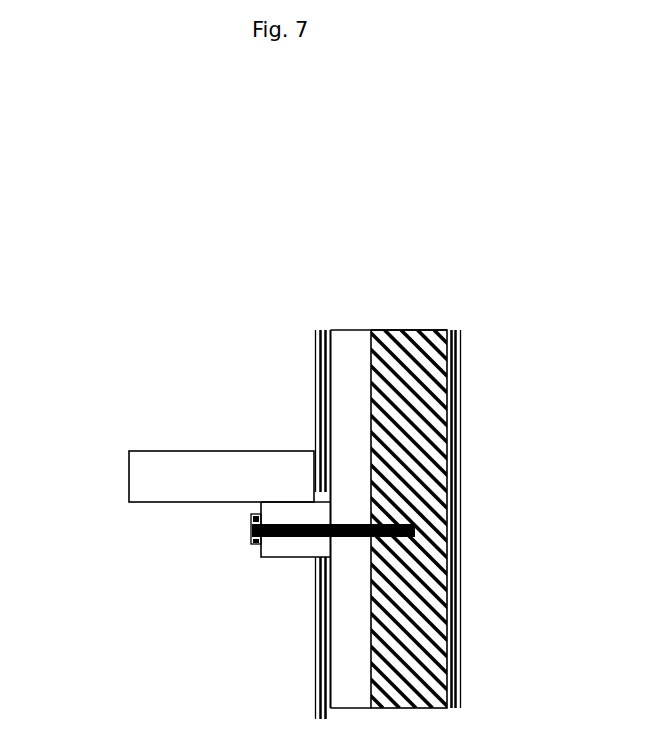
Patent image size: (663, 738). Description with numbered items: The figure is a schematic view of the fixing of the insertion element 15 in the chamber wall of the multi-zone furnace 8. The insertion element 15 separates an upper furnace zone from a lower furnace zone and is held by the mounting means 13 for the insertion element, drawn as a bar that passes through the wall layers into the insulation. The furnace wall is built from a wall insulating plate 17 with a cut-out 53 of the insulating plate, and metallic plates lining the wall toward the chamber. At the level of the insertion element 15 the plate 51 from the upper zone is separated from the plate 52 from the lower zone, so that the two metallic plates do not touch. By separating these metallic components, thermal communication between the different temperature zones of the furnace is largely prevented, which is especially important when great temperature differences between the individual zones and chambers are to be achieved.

The multi-zone furnace 8 is at (490, 297).
The plate from the upper zone 51 is at (320, 380).
The plate from the lower zone 52 is at (327, 633).
The cut-out of insulating plate 53 is at (440, 380).
The wall insulating plate 17 is at (347, 340).
The insertion element 15 is at (140, 473).
The mounting means for insertion element 13 is at (258, 548).